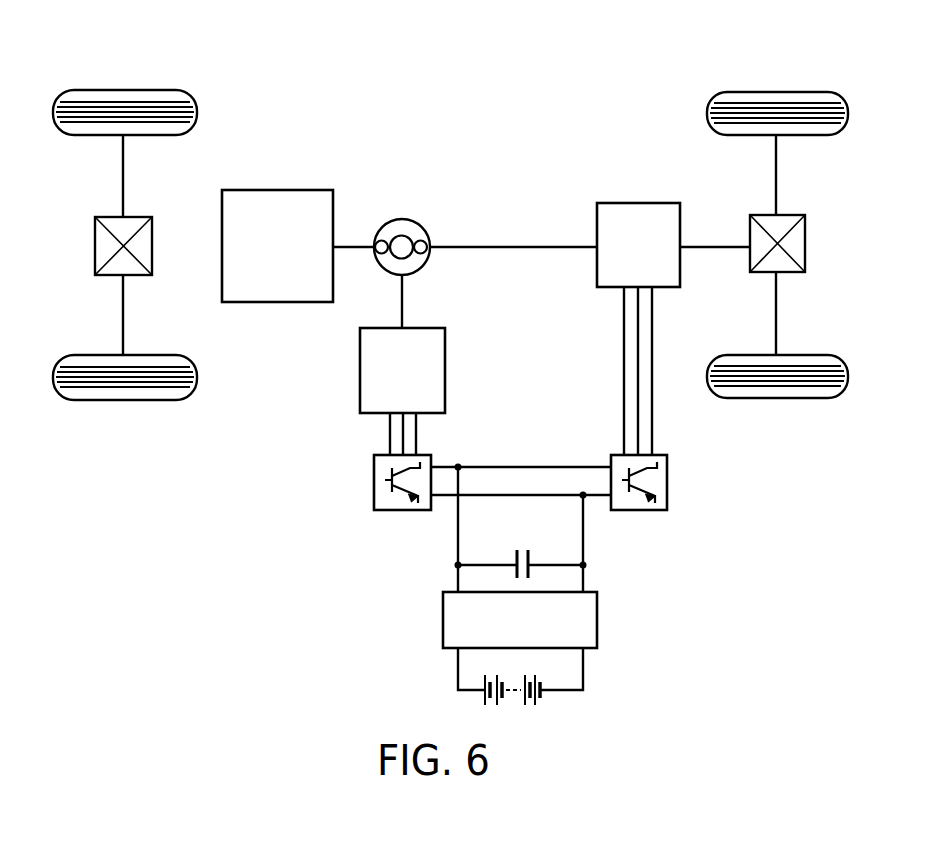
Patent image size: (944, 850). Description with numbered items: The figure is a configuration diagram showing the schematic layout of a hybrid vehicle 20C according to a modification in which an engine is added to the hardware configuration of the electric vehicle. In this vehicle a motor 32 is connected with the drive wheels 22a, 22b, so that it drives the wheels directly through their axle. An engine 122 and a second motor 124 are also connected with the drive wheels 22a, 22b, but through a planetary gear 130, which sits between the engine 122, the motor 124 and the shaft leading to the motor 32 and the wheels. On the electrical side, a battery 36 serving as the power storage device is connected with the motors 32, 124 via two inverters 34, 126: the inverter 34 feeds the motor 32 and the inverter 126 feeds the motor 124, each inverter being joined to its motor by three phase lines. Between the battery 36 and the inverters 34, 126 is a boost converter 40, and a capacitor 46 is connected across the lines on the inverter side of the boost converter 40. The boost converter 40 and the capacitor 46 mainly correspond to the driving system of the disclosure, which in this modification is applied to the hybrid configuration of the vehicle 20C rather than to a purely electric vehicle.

The hybrid vehicle 20C is at (513, 62).
The engine 122 is at (272, 190).
The planetary gear 130 is at (403, 219).
The motor 124 is at (359, 372).
The motor 32 is at (632, 203).
The drive wheel 22a is at (777, 90).
The drive wheel 22b is at (776, 400).
The inverter 126 is at (373, 480).
The inverter 34 is at (672, 478).
The capacitor 46 is at (515, 552).
The boost converter 40 is at (443, 622).
The battery 36 is at (542, 693).